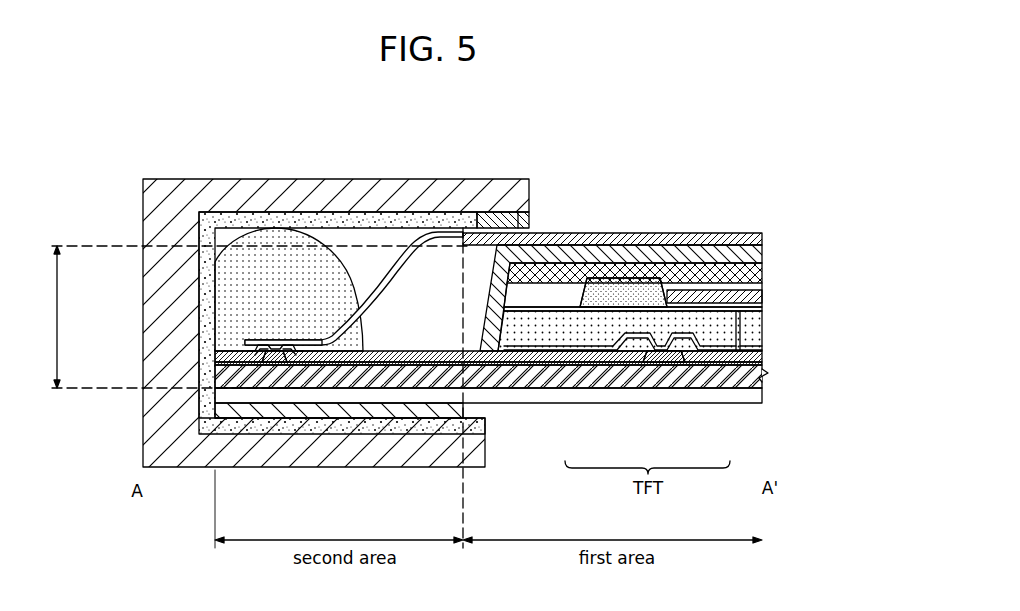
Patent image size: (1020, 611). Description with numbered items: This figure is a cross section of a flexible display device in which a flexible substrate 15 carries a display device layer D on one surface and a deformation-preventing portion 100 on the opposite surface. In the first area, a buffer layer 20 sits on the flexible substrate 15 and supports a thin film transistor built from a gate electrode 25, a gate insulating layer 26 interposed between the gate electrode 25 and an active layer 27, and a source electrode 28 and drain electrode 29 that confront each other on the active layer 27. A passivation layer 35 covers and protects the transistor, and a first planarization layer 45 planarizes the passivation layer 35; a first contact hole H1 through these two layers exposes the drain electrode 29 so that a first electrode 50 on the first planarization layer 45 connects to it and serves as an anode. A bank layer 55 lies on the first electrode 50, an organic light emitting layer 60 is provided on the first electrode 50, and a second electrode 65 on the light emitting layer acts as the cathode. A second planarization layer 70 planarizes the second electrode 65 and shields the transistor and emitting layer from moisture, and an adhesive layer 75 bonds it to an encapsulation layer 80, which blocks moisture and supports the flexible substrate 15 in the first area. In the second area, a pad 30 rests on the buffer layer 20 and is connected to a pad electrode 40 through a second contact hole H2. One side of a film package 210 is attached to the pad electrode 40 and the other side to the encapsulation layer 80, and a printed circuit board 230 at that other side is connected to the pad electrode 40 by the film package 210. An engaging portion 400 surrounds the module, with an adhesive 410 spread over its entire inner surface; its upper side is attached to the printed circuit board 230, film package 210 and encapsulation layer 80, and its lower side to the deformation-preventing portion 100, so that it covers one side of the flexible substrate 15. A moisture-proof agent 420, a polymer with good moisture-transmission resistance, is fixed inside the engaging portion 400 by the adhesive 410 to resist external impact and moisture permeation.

The engaging portion 400 is at (162, 202).
The adhesive 410 is at (222, 217).
The moisture-proof agent 420 is at (258, 265).
The second contact hole H2 is at (273, 336).
The film package 210 is at (392, 265).
The printed circuit board 230 is at (499, 221).
The bank layer 55 is at (594, 296).
The second electrode 65 is at (632, 284).
The first contact hole H1 is at (732, 333).
The encapsulation layer 80 is at (764, 240).
The adhesive layer 75 is at (764, 256).
The second planarization layer 70 is at (764, 272).
The organic light emitting layer 60 is at (764, 296).
The first electrode 50 is at (764, 309).
The first planarization layer 45 is at (764, 331).
The passivation layer 35 is at (764, 352).
The pad electrode 40 is at (268, 341).
The buffer layer 20 is at (235, 376).
The flexible substrate 15 is at (230, 395).
The deformation-preventing portion 100 is at (230, 410).
The pad 30 is at (273, 365).
The source electrode 28 is at (590, 357).
The gate insulating layer 26 is at (632, 351).
The gate electrode 25 is at (668, 357).
The active layer 27 is at (693, 351).
The drain electrode 29 is at (740, 351).
The display device layer D is at (254, 317).